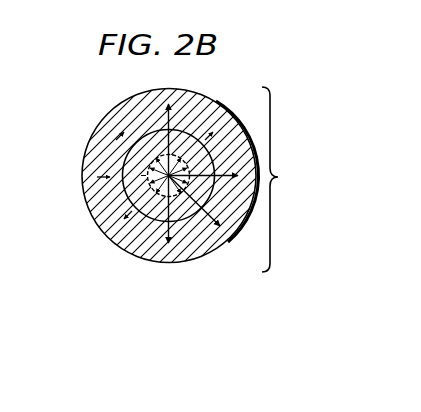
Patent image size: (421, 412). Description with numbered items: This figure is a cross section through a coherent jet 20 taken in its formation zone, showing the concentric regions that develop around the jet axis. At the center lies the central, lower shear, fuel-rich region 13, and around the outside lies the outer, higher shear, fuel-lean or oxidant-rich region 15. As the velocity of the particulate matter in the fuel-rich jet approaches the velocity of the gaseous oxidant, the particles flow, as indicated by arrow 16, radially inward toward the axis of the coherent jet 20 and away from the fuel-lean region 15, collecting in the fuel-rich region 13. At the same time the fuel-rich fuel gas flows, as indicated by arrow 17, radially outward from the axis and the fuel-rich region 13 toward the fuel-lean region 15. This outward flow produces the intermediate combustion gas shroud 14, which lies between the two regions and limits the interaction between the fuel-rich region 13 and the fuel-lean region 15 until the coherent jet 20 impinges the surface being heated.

The central, lower shear, fuel-rich region 13 is at (145, 170).
The intermediate combustion gas shroud 14 is at (128, 195).
The outer, higher shear, fuel-lean region 15 is at (106, 223).
The arrow indicating particle flow 16 is at (178, 200).
The arrow indicating fuel gas flow 17 is at (152, 222).
The coherent jet 20 is at (281, 179).